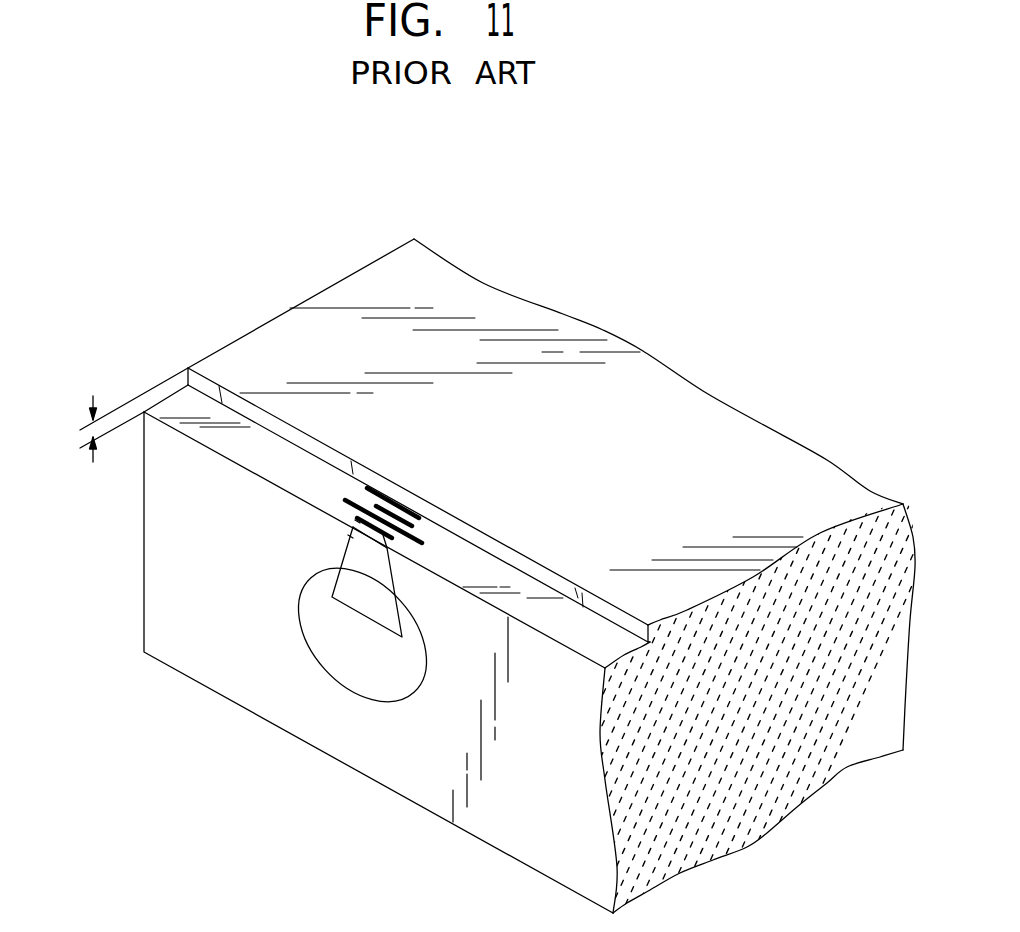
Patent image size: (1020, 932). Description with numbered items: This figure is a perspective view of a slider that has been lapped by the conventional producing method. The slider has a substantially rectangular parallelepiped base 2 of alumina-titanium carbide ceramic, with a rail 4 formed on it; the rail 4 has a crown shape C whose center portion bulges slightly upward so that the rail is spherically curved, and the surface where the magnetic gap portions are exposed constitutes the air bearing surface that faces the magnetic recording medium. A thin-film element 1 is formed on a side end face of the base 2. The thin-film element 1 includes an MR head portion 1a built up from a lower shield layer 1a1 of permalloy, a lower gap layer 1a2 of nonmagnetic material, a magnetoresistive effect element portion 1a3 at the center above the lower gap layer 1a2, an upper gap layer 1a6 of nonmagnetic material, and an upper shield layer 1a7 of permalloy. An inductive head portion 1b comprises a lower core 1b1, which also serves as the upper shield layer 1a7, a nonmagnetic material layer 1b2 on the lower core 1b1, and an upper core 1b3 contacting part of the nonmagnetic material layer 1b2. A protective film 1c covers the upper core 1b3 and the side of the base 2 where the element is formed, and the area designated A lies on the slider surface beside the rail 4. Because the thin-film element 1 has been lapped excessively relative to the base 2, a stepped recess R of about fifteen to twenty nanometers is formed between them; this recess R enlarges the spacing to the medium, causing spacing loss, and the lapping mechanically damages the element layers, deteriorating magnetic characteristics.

The thin-film element 1 is at (247, 667).
The MR head portion 1a is at (375, 407).
The lower shield layer 1a1 is at (373, 489).
The lower gap layer 1a2 is at (388, 506).
The magnetoresistive effect element portion 1a3 is at (400, 517).
The upper gap layer 1a6 is at (420, 517).
The upper shield layer 1a7 is at (433, 539).
The inductive head portion 1b is at (228, 489).
The lower core 1b1 is at (347, 502).
The nonmagnetic material layer 1b2 is at (357, 522).
The upper core 1b3 is at (350, 537).
The protective film 1c is at (186, 430).
The base 2 is at (385, 256).
The rail 4 is at (468, 302).
The air flow direction A is at (686, 410).
The crown shape C is at (348, 285).
The recess R is at (92, 432).